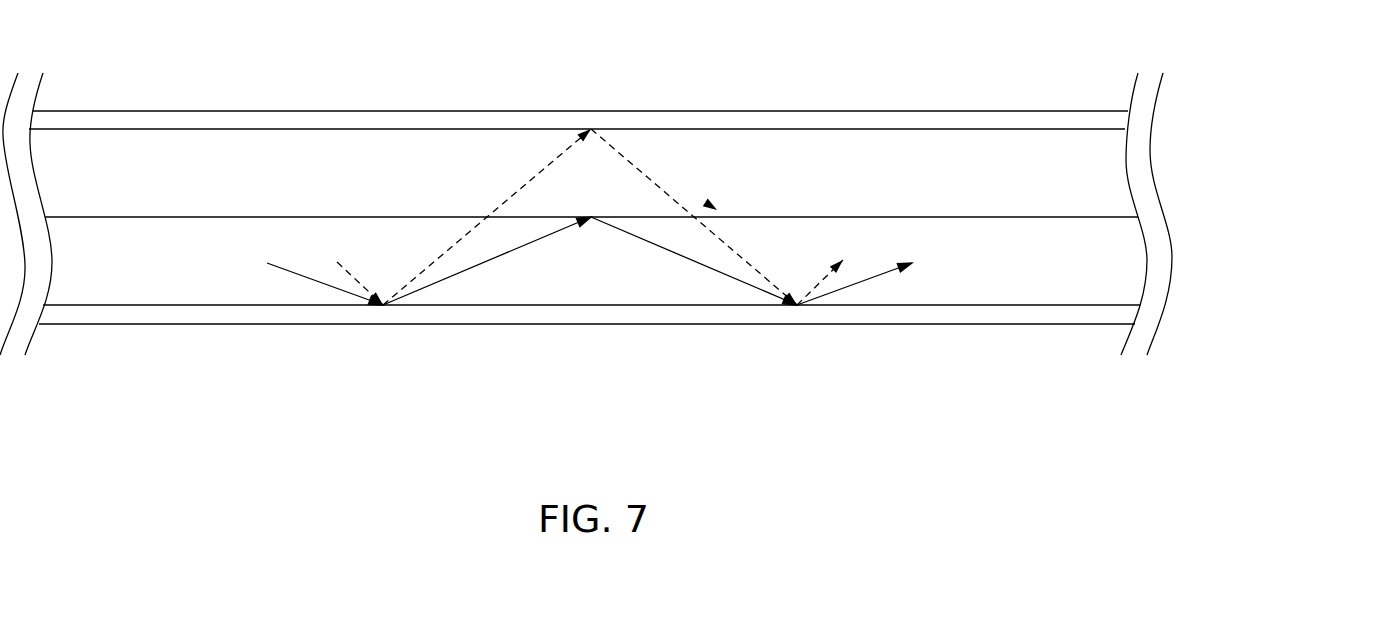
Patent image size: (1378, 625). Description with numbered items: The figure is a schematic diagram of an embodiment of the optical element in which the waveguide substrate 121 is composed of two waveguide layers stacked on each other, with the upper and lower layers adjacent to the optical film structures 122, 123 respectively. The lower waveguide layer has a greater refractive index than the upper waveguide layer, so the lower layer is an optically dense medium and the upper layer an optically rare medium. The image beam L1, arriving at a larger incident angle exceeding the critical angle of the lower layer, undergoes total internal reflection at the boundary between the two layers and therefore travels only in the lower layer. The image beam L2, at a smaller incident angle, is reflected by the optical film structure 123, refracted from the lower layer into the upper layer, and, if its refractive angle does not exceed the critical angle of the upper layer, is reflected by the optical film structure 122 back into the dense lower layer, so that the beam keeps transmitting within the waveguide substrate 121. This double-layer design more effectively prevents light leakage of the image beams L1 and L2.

The waveguide substrate 121 is at (708, 230).
The optical film structure 122 is at (1034, 115).
The optical film structure 123 is at (1038, 316).
The image beam L1 is at (580, 261).
The image beam L2 is at (580, 217).